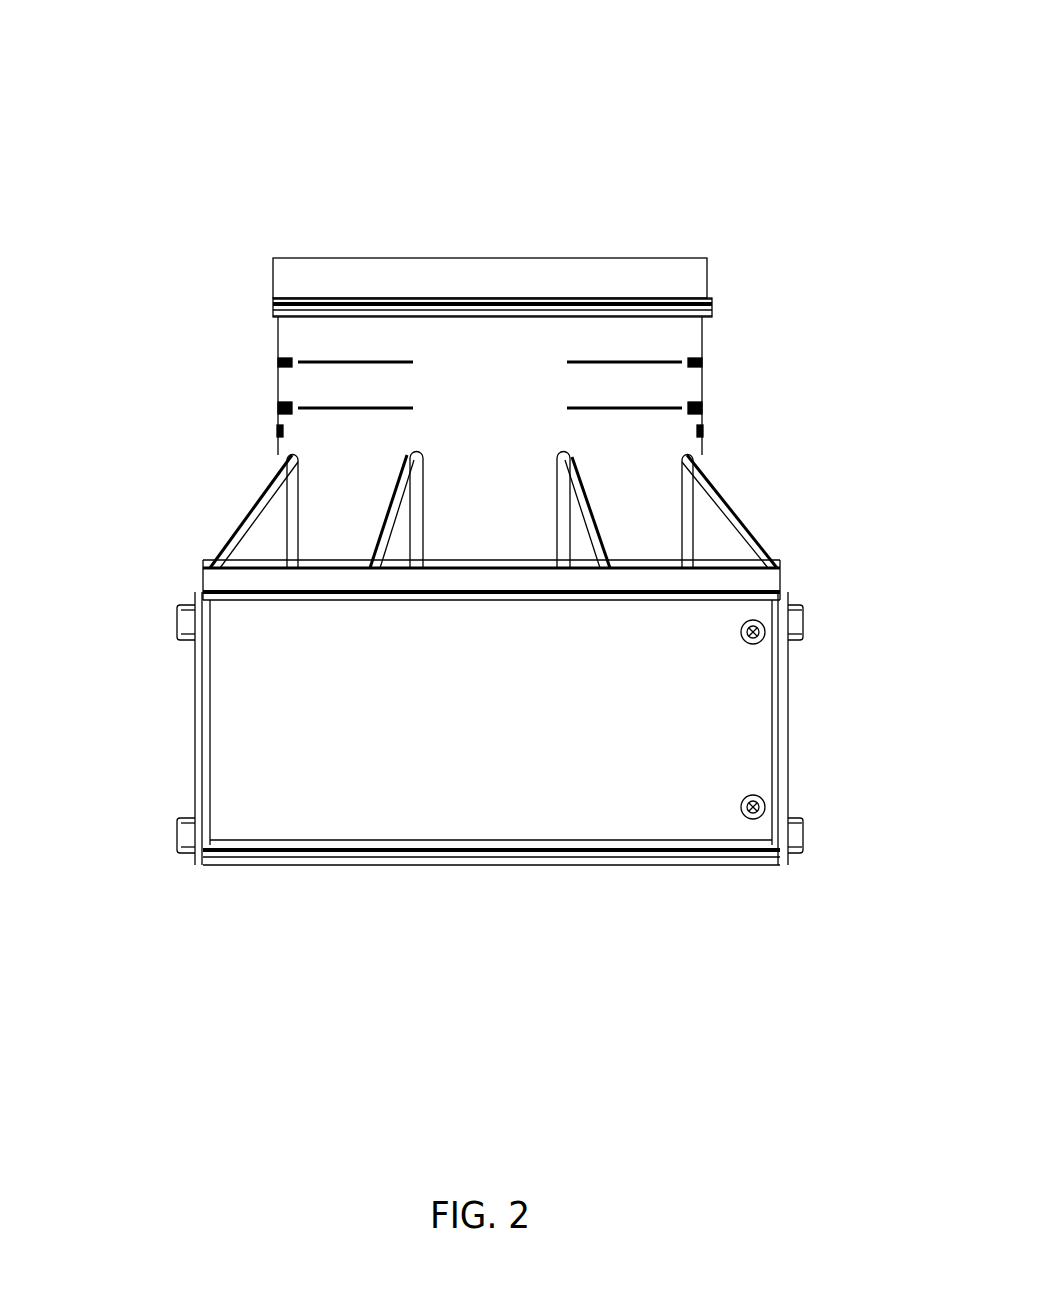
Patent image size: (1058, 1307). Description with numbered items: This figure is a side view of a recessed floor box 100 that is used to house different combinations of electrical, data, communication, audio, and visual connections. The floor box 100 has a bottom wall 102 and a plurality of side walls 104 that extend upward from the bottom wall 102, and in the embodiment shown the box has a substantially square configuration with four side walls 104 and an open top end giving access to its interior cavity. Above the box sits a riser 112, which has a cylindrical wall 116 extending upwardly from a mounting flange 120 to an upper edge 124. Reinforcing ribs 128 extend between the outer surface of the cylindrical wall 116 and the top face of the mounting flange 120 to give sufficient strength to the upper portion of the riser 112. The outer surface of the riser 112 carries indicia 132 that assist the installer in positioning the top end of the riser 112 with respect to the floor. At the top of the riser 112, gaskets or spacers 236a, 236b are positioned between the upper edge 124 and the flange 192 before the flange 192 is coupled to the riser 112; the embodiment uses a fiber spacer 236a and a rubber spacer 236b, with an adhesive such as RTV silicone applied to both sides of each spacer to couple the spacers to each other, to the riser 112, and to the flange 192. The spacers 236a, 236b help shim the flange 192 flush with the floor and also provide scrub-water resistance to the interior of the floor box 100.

The floor box 100 is at (268, 101).
The bottom wall 102 is at (608, 867).
The side walls 104 is at (192, 732).
The riser 112 is at (445, 386).
The cylindrical wall 116 is at (676, 336).
The mounting flange 120 is at (215, 580).
The upper edge 124 is at (278, 318).
The reinforcing ribs 128 is at (573, 545).
The indicia 132 is at (567, 362).
The flange 192 is at (690, 283).
The fiber spacer 236a is at (707, 313).
The rubber spacer 236b is at (278, 300).